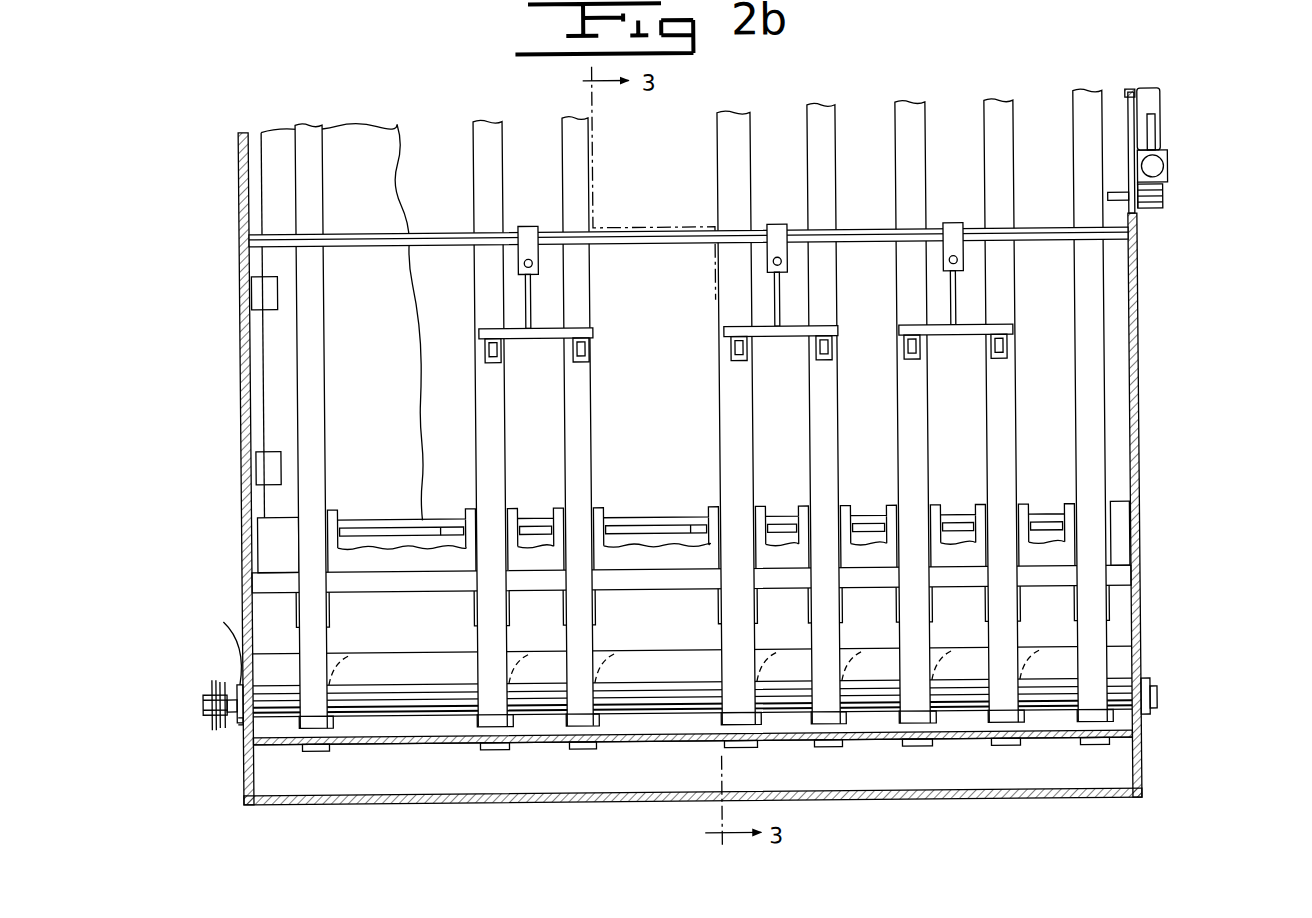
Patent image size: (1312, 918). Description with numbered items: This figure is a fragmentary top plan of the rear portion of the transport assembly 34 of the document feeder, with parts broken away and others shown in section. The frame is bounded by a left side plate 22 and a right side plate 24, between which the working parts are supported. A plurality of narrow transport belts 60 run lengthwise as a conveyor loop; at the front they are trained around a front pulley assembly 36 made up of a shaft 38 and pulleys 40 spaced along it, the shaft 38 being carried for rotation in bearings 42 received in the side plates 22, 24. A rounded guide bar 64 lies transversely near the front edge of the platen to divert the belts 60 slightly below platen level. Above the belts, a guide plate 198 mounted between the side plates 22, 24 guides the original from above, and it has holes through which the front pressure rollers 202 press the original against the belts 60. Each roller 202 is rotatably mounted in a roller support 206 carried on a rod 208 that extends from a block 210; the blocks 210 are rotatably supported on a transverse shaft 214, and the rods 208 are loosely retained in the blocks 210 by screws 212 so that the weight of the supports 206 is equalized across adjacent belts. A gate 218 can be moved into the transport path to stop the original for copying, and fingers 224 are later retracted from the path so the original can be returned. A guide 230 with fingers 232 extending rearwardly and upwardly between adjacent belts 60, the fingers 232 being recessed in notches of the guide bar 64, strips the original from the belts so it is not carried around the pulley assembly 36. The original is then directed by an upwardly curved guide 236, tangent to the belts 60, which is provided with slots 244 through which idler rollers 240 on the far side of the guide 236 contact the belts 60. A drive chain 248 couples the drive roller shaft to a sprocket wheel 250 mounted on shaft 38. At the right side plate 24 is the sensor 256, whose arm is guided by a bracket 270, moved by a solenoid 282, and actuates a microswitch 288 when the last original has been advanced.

The left side plate 22 is at (245, 370).
The right side plate 24 is at (1140, 388).
The transport assembly 34 is at (847, 806).
The front pulley assembly 36 is at (1118, 680).
The shaft 38 is at (685, 713).
The pulleys 40 is at (699, 659).
The bearings 42 is at (1188, 716).
The transport belts 60 is at (322, 358).
The guide bar 64 is at (1118, 575).
The guide plate 198 is at (265, 328).
The front pressure rollers 202 is at (591, 356).
The roller support 206 is at (592, 326).
The rod 208 is at (526, 288).
The block 210 is at (528, 224).
The screws 212 is at (520, 262).
The shaft 214 is at (284, 222).
The gate 218 is at (1062, 510).
The fingers 224 is at (437, 526).
The guide 230 is at (440, 683).
The fingers 232 is at (333, 506).
The upwardly curved guide 236 is at (527, 741).
The idler rollers 240 is at (328, 749).
The slots 244 is at (322, 710).
The drive chain 248 is at (212, 727).
The sprocket wheel 250 is at (224, 681).
The sensor 256 is at (1168, 86).
The bracket 270 is at (1163, 215).
The solenoid 282 is at (1170, 172).
The microswitch 288 is at (1162, 118).